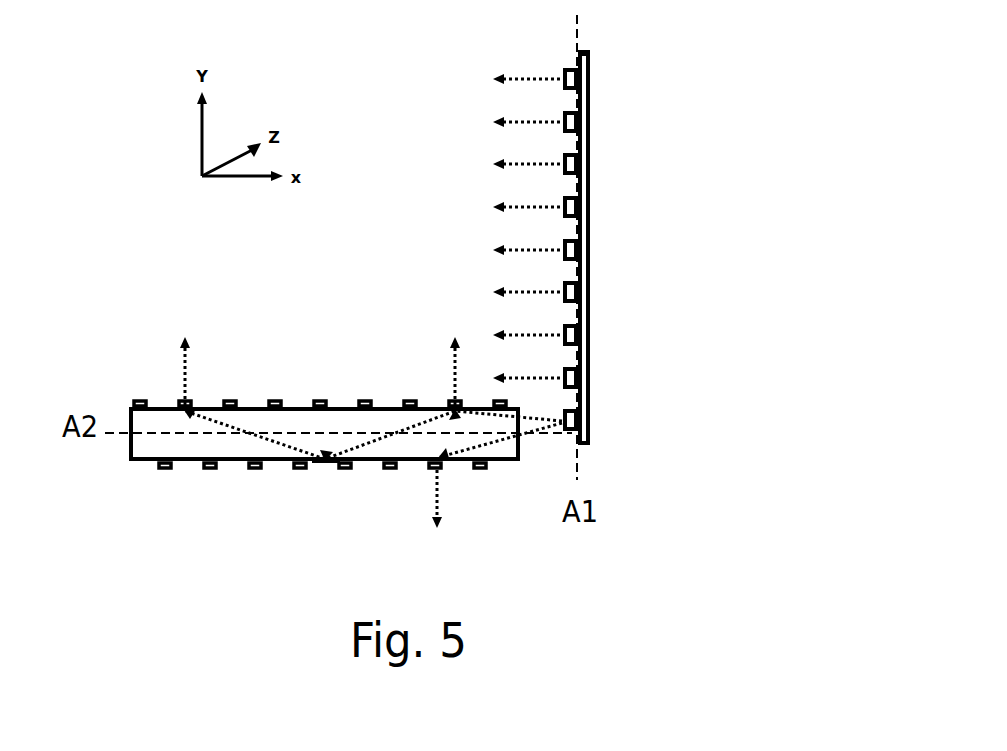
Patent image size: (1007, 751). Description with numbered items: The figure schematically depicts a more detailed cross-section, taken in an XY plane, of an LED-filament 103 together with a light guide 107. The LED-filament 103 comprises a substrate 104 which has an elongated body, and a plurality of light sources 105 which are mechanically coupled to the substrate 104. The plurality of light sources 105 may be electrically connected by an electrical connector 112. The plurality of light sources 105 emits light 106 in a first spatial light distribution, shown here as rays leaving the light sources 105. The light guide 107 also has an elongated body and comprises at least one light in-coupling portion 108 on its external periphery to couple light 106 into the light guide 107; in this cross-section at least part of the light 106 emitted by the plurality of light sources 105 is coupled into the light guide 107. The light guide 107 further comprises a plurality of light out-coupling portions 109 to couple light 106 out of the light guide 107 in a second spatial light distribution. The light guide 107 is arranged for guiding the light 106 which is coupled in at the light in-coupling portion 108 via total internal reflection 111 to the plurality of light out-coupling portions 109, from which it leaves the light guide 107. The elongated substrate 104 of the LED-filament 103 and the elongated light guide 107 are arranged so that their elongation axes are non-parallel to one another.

The LED-filament 103 is at (583, 236).
The substrate 104 is at (592, 102).
The light sources 105 is at (570, 165).
The light 106 is at (522, 88).
The light guide 107 is at (375, 414).
The light in-coupling portion 108 is at (522, 457).
The light out-coupling portions 109 is at (212, 468).
The total internal reflection 111 is at (327, 468).
The electrical connector 112 is at (562, 43).